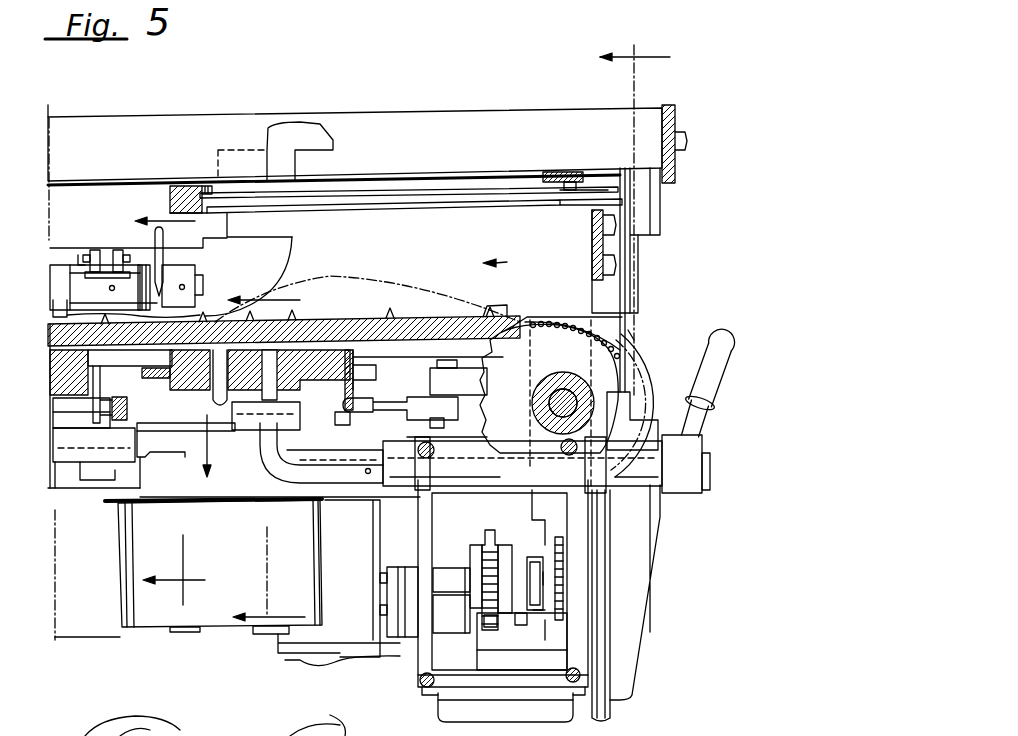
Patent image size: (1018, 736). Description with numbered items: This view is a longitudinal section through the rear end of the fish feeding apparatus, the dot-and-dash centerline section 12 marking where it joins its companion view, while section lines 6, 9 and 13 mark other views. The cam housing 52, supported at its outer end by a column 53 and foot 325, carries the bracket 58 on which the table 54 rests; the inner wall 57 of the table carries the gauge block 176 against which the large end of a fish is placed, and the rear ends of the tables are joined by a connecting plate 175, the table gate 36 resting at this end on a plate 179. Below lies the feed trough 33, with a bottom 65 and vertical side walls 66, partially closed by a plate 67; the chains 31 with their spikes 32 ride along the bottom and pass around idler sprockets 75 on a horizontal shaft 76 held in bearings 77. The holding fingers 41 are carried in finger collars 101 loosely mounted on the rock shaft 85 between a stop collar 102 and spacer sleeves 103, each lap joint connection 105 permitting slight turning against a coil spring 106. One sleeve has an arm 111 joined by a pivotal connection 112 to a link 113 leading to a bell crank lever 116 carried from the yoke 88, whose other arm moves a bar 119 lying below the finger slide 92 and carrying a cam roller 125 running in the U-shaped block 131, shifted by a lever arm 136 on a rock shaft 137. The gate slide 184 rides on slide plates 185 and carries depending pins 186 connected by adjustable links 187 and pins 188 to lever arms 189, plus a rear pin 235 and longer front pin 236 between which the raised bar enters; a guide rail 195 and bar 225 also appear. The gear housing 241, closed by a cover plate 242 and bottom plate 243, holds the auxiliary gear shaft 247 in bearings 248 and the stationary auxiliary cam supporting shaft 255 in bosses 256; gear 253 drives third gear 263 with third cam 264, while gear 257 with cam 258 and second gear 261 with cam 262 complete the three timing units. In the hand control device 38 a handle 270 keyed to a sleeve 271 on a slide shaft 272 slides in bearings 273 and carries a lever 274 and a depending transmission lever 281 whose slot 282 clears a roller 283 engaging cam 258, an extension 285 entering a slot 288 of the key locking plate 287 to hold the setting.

The centerline section 12 is at (655, 59).
The table 54 is at (443, 110).
The inner wall 57 is at (430, 133).
The connecting plate 175 is at (677, 125).
The bracket 58 is at (615, 289).
The gauge block 176 is at (288, 161).
The plate 179 is at (568, 172).
The table gate 36 is at (390, 178).
The guide rail 195 is at (372, 207).
The vertical side wall 66 is at (490, 229).
The plate 67 is at (592, 242).
The section line 6 is at (162, 415).
The section line 13 is at (270, 446).
The section line 9 is at (205, 460).
The spacer sleeve 103 is at (58, 287).
The lap joint connection 105 is at (106, 291).
The yoke 88 is at (55, 316).
The finger collar 101 is at (133, 316).
The arm 111 is at (95, 250).
The link 113 is at (117, 250).
The pivotal connection 112 is at (82, 256).
The coil spring 106 is at (144, 280).
The holding finger 41 is at (164, 240).
The rock shaft 85 is at (203, 293).
The stop collar 102 is at (196, 300).
The feed trough 33 is at (372, 286).
The bell crank lever 116 is at (284, 341).
The rear pin 235 is at (310, 318).
The finger slide 92 is at (60, 383).
The bar 119 is at (128, 407).
The front pin 236 is at (213, 400).
The cam roller 125 is at (100, 433).
The U-shaped block 131 is at (94, 458).
The lever arm 136 is at (185, 434).
The bar 225 is at (300, 433).
The lever 274 is at (321, 453).
The bearing 273 is at (621, 500).
The slide shaft 272 is at (711, 463).
The sleeve 271 is at (703, 443).
The hand control device 38 is at (723, 383).
The handle 270 is at (725, 352).
The gate slide 184 is at (354, 354).
The slide plate 185 is at (378, 366).
The lever arm 189 is at (467, 377).
The adjustable link 187 is at (385, 405).
The depending pin 186 is at (344, 425).
The pin 188 is at (432, 420).
The idler sprocket 75 is at (566, 403).
The spike 32 is at (492, 313).
The chain 31 is at (630, 334).
The bottom 65 is at (468, 326).
The bearing 77 is at (540, 394).
The horizontal shaft 76 is at (563, 392).
The cover plate 242 is at (655, 530).
The bottom plate 243 is at (503, 704).
The auxiliary gear shaft 247 is at (387, 583).
The auxiliary cam supporting shaft 255 is at (387, 612).
The bearing 248 is at (451, 580).
The boss 256 is at (451, 600).
The third cam 264 is at (470, 556).
The gear 253 is at (490, 532).
The cam 262 is at (508, 550).
The slot 282 is at (526, 564).
The roller 283 is at (535, 580).
The gear 257 is at (563, 596).
The transmission lever 281 is at (532, 490).
The key locking plate 287 is at (565, 640).
The gear housing 241 is at (580, 628).
The slot 288 is at (492, 627).
The second gear 261 is at (521, 625).
The cam 258 is at (535, 614).
The third gear 263 is at (485, 592).
The extension 285 is at (655, 617).
The cam housing 52 is at (112, 620).
The rock shaft 137 is at (185, 632).
The foot 325 is at (260, 632).
The column 53 is at (285, 657).